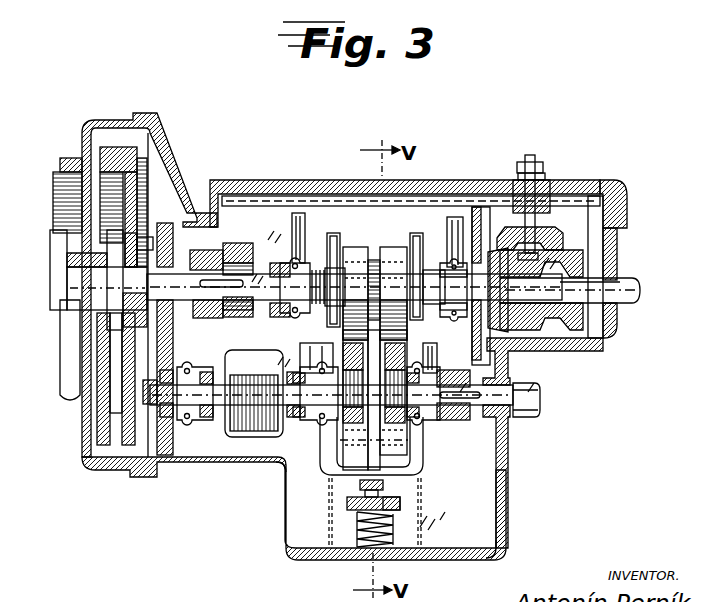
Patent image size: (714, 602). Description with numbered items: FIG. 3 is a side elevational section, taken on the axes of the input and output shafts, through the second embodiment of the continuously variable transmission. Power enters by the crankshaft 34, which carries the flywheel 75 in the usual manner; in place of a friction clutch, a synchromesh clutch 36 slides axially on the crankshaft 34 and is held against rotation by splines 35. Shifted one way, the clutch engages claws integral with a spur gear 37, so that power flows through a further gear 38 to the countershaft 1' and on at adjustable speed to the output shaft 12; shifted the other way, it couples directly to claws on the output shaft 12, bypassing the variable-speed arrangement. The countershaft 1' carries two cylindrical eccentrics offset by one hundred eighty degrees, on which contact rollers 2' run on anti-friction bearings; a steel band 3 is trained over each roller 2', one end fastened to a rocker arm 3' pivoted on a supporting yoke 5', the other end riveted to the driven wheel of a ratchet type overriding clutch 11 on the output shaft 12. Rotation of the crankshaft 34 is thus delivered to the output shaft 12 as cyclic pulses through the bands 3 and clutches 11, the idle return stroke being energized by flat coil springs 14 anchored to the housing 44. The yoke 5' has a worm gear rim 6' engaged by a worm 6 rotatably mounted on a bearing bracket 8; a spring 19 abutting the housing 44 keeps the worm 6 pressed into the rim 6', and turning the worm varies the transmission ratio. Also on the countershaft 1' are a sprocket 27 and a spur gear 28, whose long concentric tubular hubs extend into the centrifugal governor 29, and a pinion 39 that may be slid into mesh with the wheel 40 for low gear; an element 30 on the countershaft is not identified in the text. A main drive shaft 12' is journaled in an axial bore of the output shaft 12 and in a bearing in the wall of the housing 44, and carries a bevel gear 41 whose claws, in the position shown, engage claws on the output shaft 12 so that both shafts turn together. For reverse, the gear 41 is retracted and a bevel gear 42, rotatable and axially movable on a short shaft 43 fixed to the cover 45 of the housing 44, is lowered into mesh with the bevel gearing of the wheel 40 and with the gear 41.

The flywheel 75 is at (105, 148).
The spur gear 37 is at (168, 224).
The bearing housing 36 is at (225, 243).
The flat coil springs 14 is at (333, 233).
The cover 45 is at (484, 180).
The short shaft 43 is at (535, 187).
The bevel gear 42 is at (563, 233).
The main drive shaft 12' is at (582, 278).
The splines 35 is at (232, 282).
The steel band 3 is at (377, 279).
The ratchet type overriding clutch 11 is at (375, 262).
The crankshaft 34 is at (80, 293).
The bearing bracket 30 is at (196, 377).
The contact rollers 2' is at (320, 302).
The output shaft 12 is at (354, 276).
The wheel 40 is at (491, 360).
The bevel gear 41 is at (567, 317).
The gear 38 is at (165, 422).
The centrifugal governor 29 is at (228, 435).
The spur gear 28 is at (254, 395).
The countershaft 1' is at (351, 412).
The pinion 39 is at (470, 420).
The rocker arm 3' is at (376, 404).
The sprocket 27 is at (283, 468).
The worm gear rim 6' is at (341, 491).
The supporting yoke 5' is at (386, 481).
The bearing bracket 8 is at (350, 504).
The worm 6 is at (409, 511).
The transmission housing 44 is at (506, 546).
The spring 19 is at (373, 546).